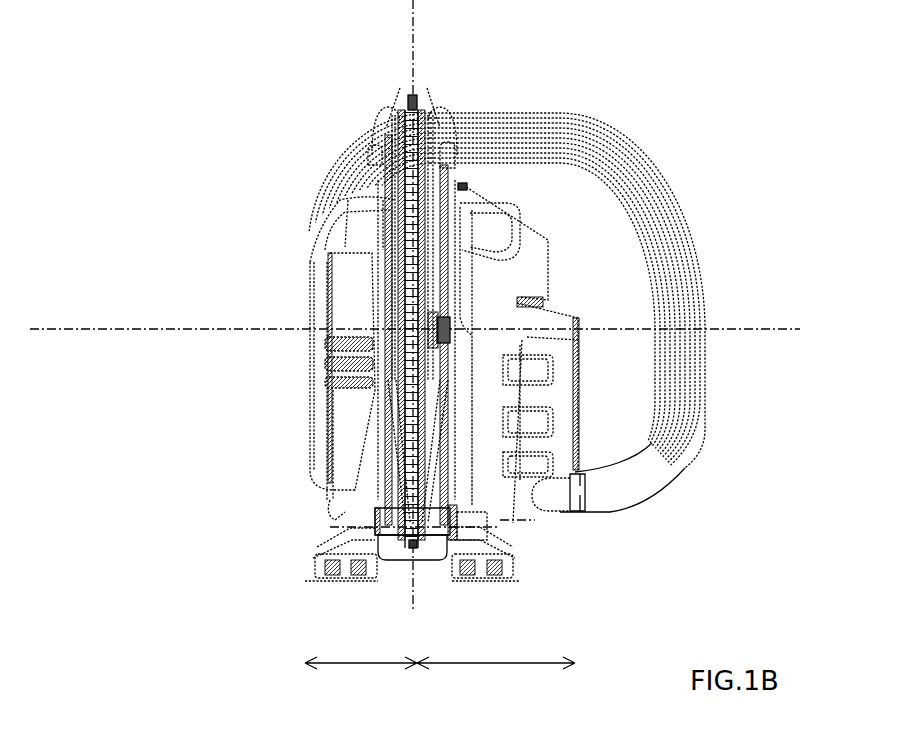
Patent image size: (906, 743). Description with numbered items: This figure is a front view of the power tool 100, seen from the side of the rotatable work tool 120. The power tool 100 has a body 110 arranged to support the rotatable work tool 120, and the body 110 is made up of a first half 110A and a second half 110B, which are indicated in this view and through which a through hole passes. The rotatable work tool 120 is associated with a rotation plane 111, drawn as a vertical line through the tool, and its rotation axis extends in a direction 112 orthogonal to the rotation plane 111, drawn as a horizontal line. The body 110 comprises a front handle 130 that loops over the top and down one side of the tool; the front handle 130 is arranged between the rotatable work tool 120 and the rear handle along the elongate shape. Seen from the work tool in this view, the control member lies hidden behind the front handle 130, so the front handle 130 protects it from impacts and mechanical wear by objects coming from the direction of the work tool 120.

The power tool 100 is at (135, 113).
The body 110 is at (338, 423).
The first half 110A is at (405, 90).
The second half 110B is at (423, 90).
The rotation plane 111 is at (413, 22).
The direction 112 is at (97, 332).
The rotatable work tool 120 is at (410, 210).
The front handle 130 is at (568, 140).